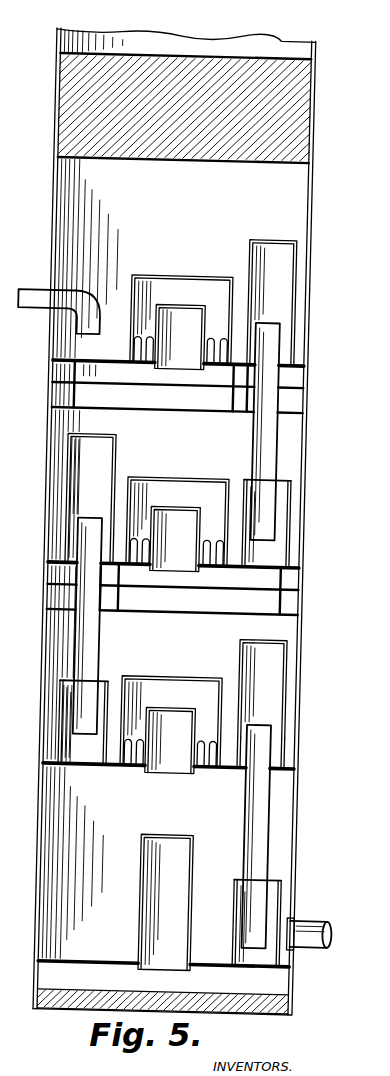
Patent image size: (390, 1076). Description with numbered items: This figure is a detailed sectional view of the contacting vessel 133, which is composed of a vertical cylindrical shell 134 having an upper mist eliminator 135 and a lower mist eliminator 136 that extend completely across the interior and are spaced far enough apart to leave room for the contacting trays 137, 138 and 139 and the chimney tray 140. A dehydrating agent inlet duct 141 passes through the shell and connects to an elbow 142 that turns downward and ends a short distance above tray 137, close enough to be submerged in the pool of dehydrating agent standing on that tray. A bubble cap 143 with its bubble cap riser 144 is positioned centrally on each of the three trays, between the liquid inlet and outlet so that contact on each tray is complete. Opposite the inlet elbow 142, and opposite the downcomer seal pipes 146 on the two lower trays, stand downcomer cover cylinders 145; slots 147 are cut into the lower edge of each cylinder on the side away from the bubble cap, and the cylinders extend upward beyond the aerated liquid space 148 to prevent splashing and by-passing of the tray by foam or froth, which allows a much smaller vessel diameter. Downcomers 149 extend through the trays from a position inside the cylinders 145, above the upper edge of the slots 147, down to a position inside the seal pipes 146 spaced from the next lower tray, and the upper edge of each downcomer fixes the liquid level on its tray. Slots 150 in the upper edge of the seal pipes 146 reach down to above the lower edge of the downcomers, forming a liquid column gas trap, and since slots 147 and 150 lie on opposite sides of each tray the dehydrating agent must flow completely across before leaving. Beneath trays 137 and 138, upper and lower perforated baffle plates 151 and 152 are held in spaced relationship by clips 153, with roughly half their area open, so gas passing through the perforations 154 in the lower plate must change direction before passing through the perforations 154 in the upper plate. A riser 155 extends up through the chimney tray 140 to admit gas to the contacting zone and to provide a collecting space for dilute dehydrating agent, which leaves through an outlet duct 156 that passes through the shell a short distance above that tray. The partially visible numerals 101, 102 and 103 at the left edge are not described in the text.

The adjacent figure numeral (cut off) 101 is at (9, 920).
The adjacent figure numeral (cut off) 102 is at (10, 957).
The adjacent figure numeral (cut off) 103 is at (9, 878).
The contacting vessel 133 is at (302, 277).
The vertical cylindrical shell 134 is at (306, 198).
The upper mist eliminator 135 is at (304, 52).
The lower mist eliminator 136 is at (76, 981).
The contacting tray 137 is at (49, 368).
The contacting tray 138 is at (51, 571).
The contacting tray 139 is at (49, 775).
The chimney tray 140 is at (58, 960).
The dehydrating agent inlet duct 141 is at (22, 292).
The elbow 142 is at (84, 297).
The bubble cap 143 is at (176, 272).
The bubble cap riser 144 is at (158, 327).
The downcomer cover cylinder 145 is at (260, 238).
The downcomer seal pipe 146 is at (290, 529).
The slot 147 is at (289, 347).
The aerated liquid space 148 is at (212, 276).
The downcomer 149 is at (278, 430).
The slot 150 is at (287, 485).
The upper perforated baffle plate 151 is at (49, 390).
The lower perforated baffle plate 152 is at (49, 416).
The clip 153 is at (74, 395).
The perforation 154 is at (189, 407).
The riser 155 is at (150, 850).
The outlet duct 156 is at (328, 944).